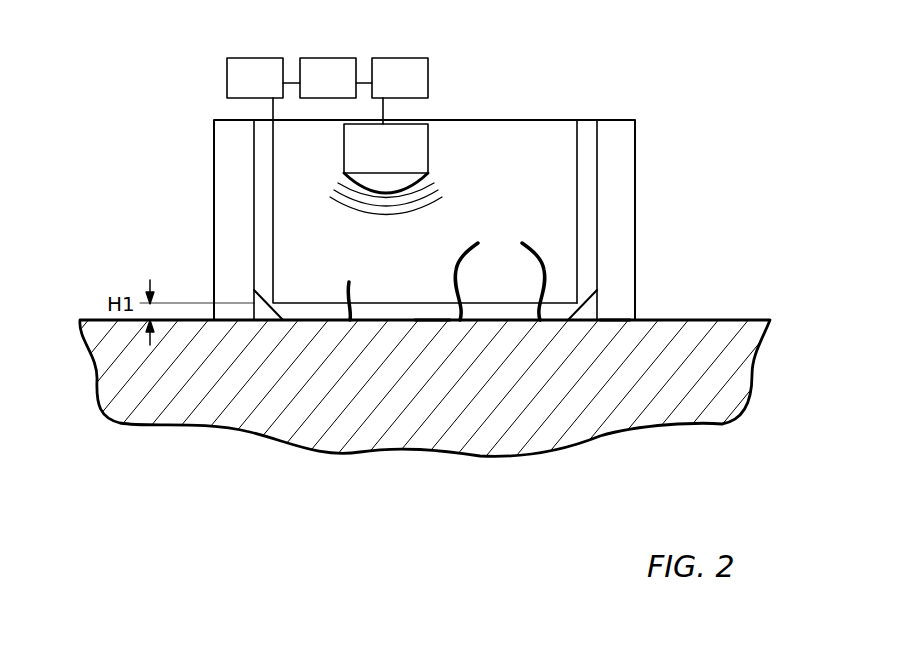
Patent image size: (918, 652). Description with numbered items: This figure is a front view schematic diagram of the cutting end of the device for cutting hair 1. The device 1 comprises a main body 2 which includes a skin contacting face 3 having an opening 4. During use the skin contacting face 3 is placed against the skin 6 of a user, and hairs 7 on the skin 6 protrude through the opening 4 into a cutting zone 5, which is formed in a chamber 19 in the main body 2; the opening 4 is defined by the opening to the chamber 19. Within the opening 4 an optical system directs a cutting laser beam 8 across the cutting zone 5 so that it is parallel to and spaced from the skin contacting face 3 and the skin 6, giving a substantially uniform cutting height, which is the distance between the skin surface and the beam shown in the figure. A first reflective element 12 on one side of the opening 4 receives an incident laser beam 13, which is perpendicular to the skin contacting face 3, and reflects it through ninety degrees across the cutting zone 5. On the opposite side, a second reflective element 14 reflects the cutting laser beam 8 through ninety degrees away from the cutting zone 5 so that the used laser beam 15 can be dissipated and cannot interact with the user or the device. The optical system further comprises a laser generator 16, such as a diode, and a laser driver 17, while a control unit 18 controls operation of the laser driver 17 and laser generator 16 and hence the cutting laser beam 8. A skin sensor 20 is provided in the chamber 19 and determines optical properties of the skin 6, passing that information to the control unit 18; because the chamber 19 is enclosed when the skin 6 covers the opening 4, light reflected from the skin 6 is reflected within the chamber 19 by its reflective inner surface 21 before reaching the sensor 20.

The device for cutting hair 1 is at (639, 78).
The main body 2 is at (636, 200).
The skin contacting face 3 is at (613, 322).
The opening 4 is at (432, 322).
The cutting zone 5 is at (433, 301).
The skin 6 is at (710, 428).
The hairs 7 is at (352, 282).
The cutting laser beam 8 is at (312, 302).
The first reflective element 12 is at (258, 290).
The incident laser beam 13 is at (273, 143).
The second reflective element 14 is at (597, 283).
The used laser beam 15 is at (577, 142).
The laser generator 16 is at (256, 62).
The laser driver 17 is at (329, 62).
The control unit 18 is at (399, 62).
The chamber 19 is at (483, 190).
The skin sensor 20 is at (430, 134).
The inner surface 21 is at (577, 192).